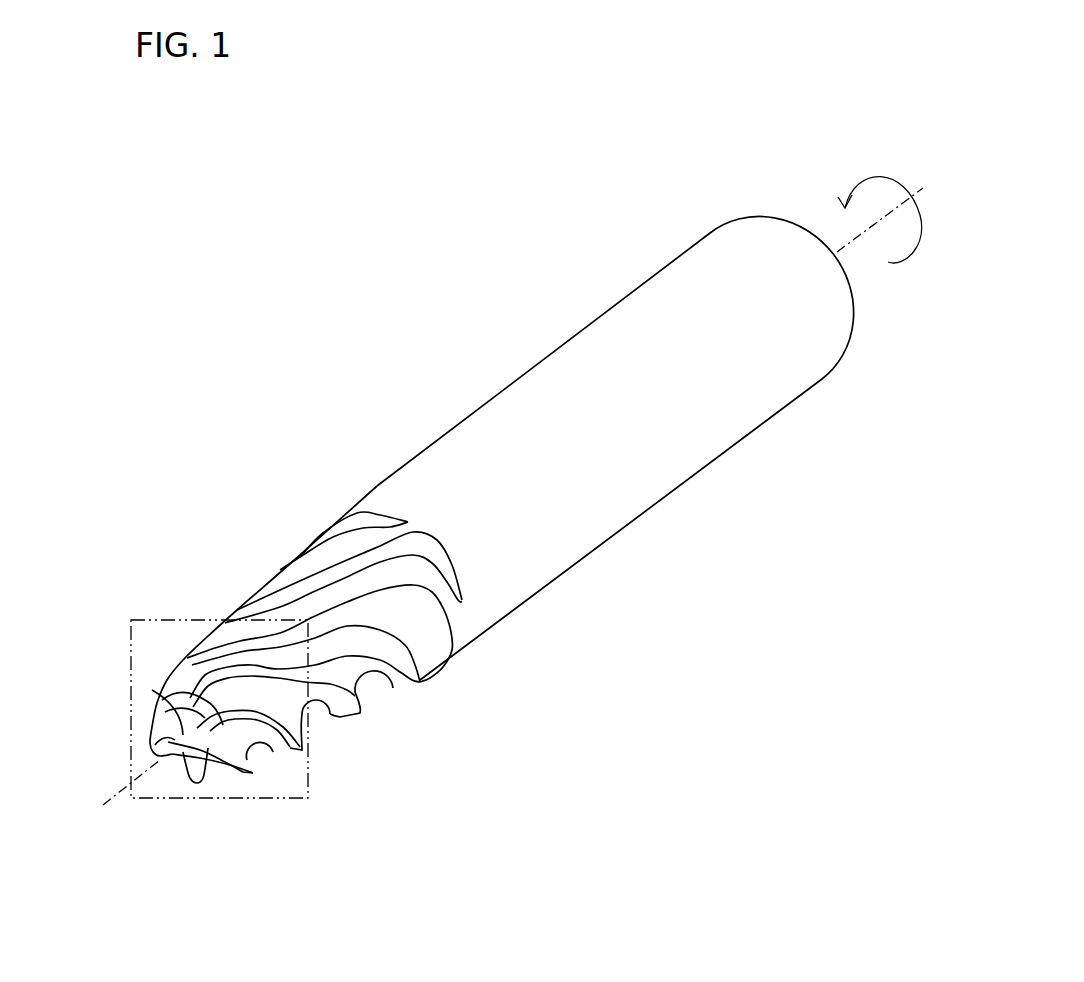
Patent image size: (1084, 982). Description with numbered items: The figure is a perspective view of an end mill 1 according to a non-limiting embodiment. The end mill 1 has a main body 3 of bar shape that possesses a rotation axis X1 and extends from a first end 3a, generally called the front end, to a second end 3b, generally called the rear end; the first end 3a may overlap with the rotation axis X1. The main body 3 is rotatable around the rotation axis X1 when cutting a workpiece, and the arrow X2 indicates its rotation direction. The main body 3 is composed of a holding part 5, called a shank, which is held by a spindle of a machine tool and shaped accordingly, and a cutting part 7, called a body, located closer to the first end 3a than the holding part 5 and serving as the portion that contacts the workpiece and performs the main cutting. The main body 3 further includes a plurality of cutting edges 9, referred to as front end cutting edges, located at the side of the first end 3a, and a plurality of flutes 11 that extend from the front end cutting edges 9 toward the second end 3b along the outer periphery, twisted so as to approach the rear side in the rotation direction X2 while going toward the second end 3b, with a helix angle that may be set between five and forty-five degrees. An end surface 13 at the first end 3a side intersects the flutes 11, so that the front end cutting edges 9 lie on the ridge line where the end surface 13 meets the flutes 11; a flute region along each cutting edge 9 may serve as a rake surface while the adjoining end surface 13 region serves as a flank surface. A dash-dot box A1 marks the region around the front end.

The end mill 1 is at (364, 352).
The main body 3 is at (502, 499).
The holding part 5 is at (713, 428).
The cutting part 7 is at (343, 710).
The cutting edge 9 is at (183, 716).
The flute 11 is at (372, 562).
The end surface 13 is at (182, 751).
The first end 3a is at (185, 745).
The second end 3b is at (840, 257).
The rotation axis X1 is at (505, 493).
The rotation direction X2 is at (858, 209).
The enlarged region A1 is at (305, 800).